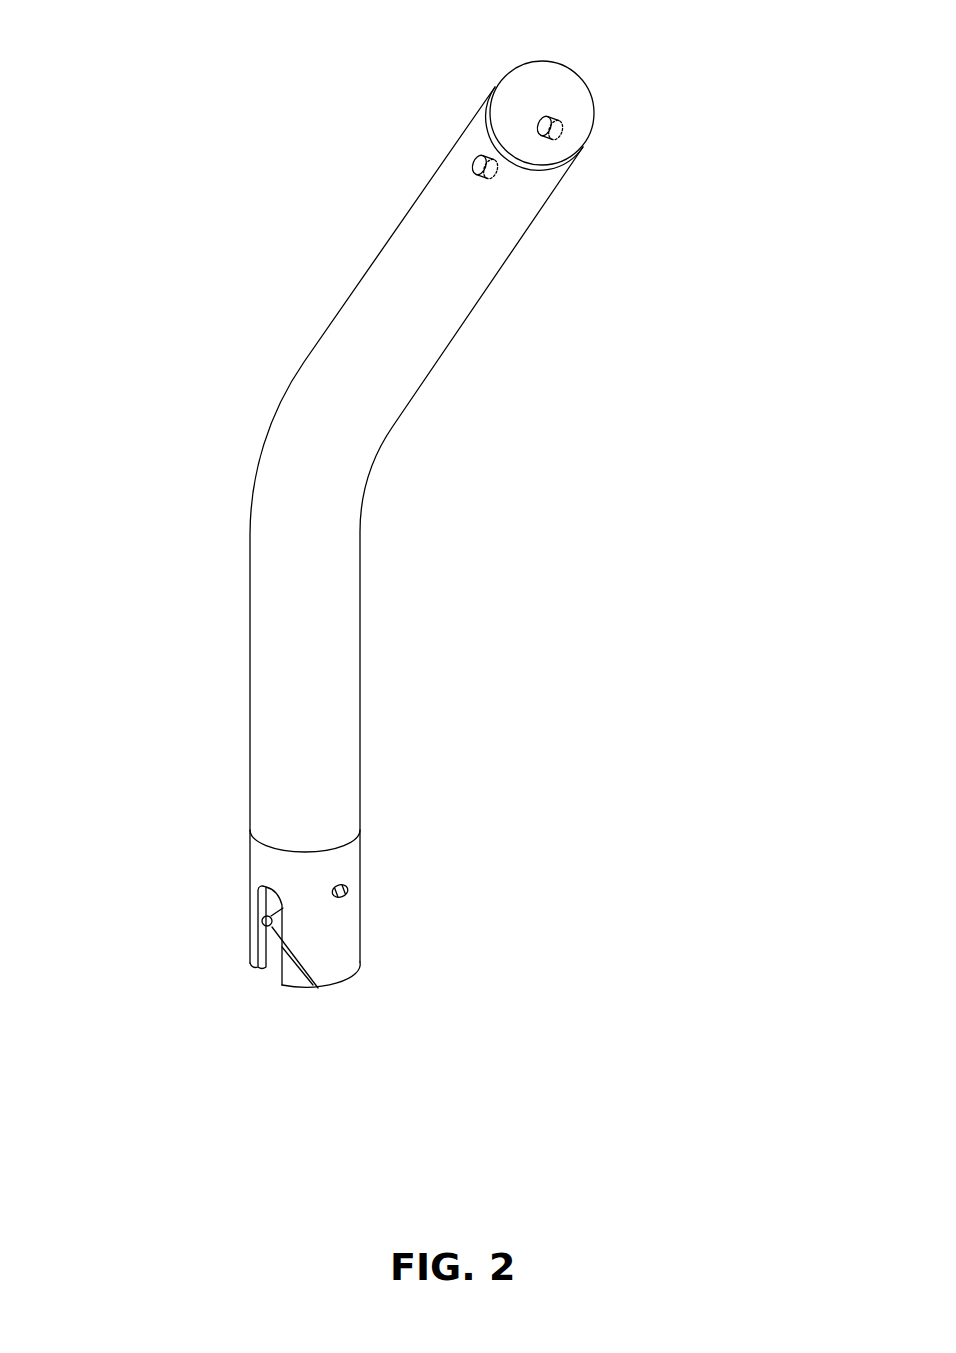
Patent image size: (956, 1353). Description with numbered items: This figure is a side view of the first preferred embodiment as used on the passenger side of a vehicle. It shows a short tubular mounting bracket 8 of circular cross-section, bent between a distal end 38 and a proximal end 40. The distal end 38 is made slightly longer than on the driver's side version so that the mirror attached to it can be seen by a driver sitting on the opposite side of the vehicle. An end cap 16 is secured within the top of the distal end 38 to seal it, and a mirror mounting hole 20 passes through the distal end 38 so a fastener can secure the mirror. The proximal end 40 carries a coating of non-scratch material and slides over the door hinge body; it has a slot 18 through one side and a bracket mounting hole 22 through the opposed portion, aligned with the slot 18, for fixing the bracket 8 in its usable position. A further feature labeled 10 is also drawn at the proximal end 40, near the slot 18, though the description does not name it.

The distal end 38 is at (360, 133).
The tubular mounting bracket 8 is at (358, 282).
The end cap 16 is at (547, 105).
The mirror mounting hole 20 is at (483, 183).
The proximal end 40 is at (230, 836).
The slot 10 is at (253, 905).
The slot 18 is at (275, 963).
The bracket mounting hole 22 is at (313, 983).